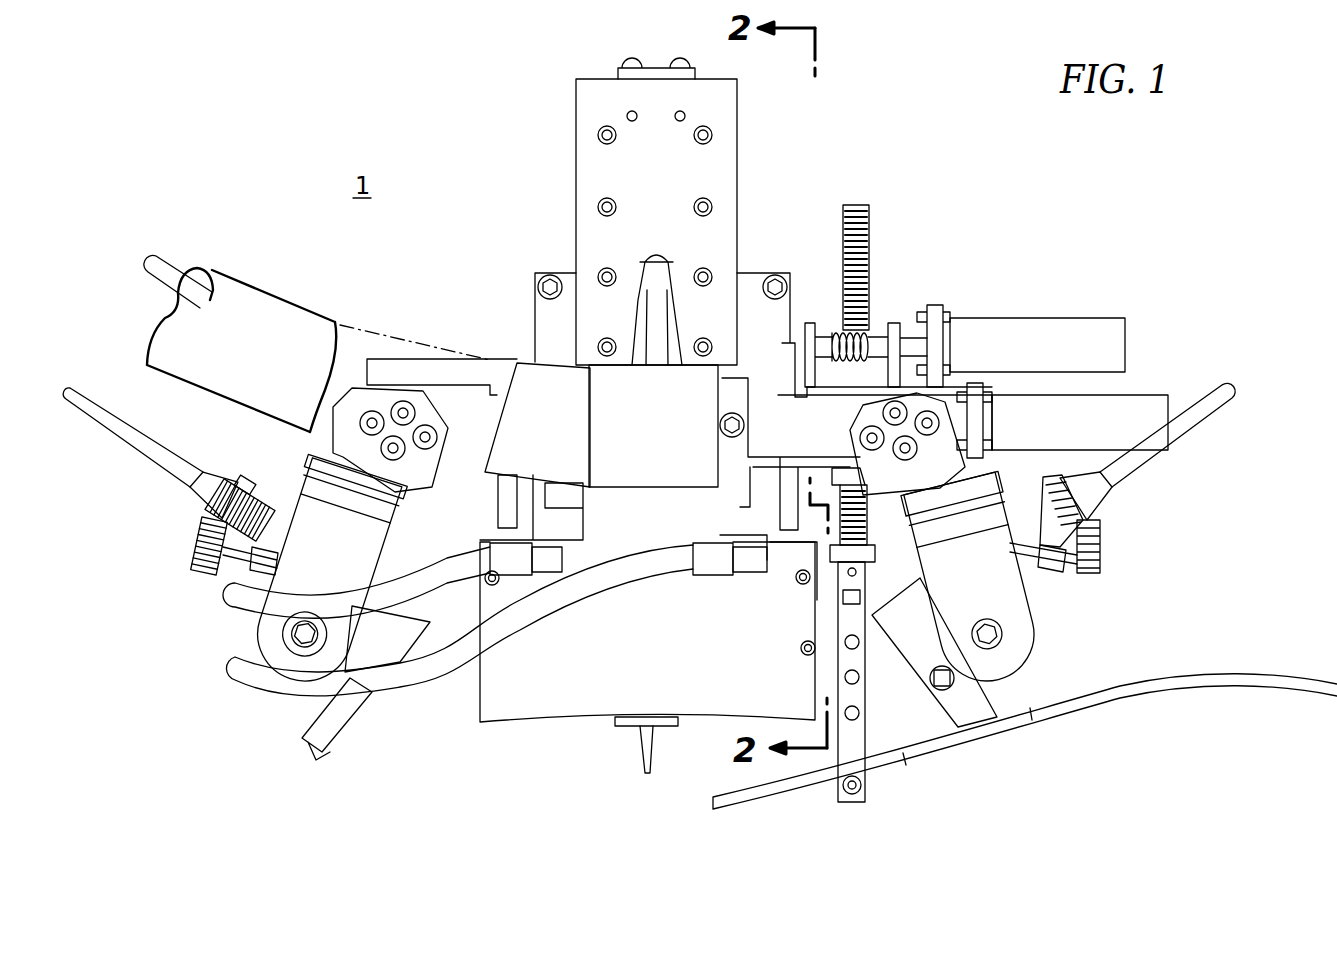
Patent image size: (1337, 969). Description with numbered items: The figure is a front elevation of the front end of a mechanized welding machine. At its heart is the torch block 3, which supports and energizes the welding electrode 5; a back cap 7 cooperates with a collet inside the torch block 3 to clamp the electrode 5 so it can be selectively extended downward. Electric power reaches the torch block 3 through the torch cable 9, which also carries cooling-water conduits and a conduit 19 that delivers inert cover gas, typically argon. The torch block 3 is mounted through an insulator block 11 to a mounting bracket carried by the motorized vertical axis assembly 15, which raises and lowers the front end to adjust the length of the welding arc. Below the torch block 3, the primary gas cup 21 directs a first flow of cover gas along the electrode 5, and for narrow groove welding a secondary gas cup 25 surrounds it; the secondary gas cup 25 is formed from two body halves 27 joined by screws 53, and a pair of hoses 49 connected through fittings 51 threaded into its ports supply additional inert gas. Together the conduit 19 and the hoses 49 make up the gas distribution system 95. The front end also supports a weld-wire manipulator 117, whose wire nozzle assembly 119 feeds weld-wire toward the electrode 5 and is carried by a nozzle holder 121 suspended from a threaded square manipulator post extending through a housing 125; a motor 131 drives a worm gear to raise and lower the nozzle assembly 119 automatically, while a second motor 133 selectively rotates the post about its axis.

The torch block 3 is at (600, 416).
The welding electrode 5 is at (645, 760).
The back cap 7 is at (652, 255).
The torch cable 9 is at (248, 290).
The insulator block 11 is at (730, 470).
The motorized vertical axis assembly 15 is at (583, 170).
The conduit 19 is at (165, 278).
The primary gas cup 21 is at (625, 722).
The secondary gas cup 25 is at (458, 700).
The body halves 27 is at (505, 712).
The hoses 49 is at (455, 658).
The fittings 51 is at (748, 563).
The screws 53 is at (800, 645).
The gas distribution system 95 is at (215, 625).
The weld-wire manipulator 117 is at (893, 252).
The wire nozzle assembly 119 is at (885, 782).
The nozzle holder 121 is at (855, 742).
The housing 125 is at (862, 372).
The motor 131 is at (1063, 322).
The second motor 133 is at (1148, 407).